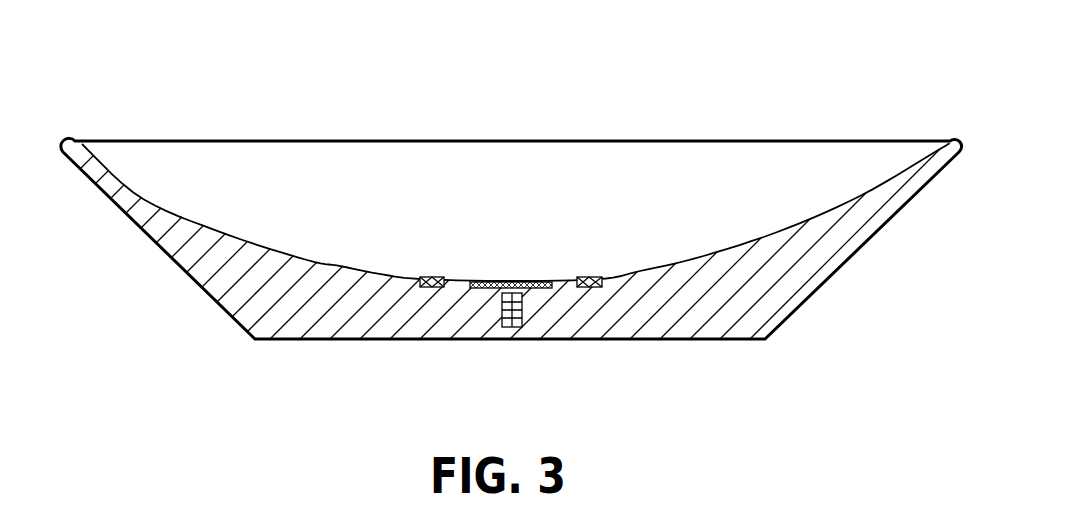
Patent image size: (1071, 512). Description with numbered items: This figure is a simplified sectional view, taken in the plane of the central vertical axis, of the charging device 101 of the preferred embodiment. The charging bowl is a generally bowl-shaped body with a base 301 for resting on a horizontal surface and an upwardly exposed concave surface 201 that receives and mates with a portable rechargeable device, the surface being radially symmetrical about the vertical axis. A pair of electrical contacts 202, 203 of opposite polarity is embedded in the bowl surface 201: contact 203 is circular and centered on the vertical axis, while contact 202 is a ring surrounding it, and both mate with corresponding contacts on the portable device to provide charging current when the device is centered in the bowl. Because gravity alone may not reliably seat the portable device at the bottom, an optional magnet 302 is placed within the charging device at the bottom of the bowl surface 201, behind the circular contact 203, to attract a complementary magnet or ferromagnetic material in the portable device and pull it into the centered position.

The charging device 101 is at (583, 86).
The concave surface 201 is at (735, 192).
The electrical contact 202 is at (431, 278).
The electrical contact 203 is at (498, 282).
The base 301 is at (653, 340).
The magnet 302 is at (512, 328).